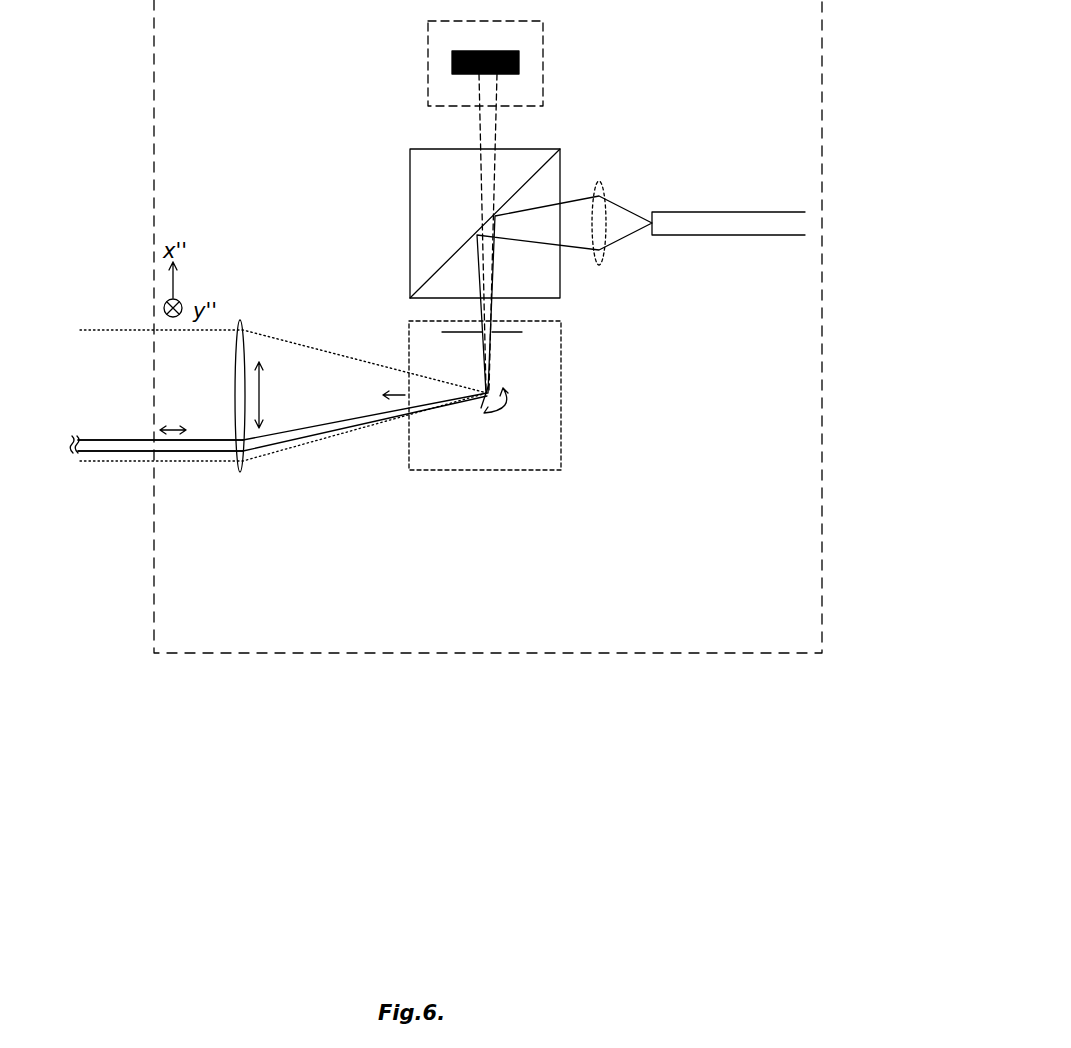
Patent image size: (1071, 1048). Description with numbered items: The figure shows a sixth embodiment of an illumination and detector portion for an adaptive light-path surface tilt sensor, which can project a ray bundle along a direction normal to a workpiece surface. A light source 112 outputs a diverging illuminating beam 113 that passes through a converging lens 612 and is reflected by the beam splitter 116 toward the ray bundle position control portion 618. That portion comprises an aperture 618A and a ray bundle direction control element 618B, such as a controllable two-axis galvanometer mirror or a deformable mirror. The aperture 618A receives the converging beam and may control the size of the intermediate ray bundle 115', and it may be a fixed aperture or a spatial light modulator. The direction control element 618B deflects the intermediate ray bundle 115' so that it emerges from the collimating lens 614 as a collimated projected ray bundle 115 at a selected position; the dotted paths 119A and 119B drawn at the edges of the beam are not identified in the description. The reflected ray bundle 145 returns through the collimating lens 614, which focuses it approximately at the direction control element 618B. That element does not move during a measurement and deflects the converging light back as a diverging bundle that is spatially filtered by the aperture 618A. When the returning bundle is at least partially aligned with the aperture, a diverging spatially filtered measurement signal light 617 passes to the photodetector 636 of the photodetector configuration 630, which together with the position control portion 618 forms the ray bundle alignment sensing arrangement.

The photodetector configuration 630 is at (543, 100).
The photodetector 636 is at (519, 62).
The diverging spatially filtered measurement signal light 617 is at (477, 132).
The beam splitter 116 is at (410, 180).
The illuminating beam 113 is at (637, 214).
The lens 612 is at (598, 268).
The light source 112 is at (697, 238).
The ray bundle position control portion 618 is at (561, 456).
The aperture 618A is at (522, 334).
The intermediate ray bundle 115' is at (434, 420).
The ray bundle direction control element 618B is at (497, 378).
The collimating lens 614 is at (242, 472).
The projected ray bundle 115 is at (137, 422).
The reflected ray bundle 145 is at (133, 440).
The scan boundary 119B is at (118, 330).
The scan boundary 119A is at (97, 462).